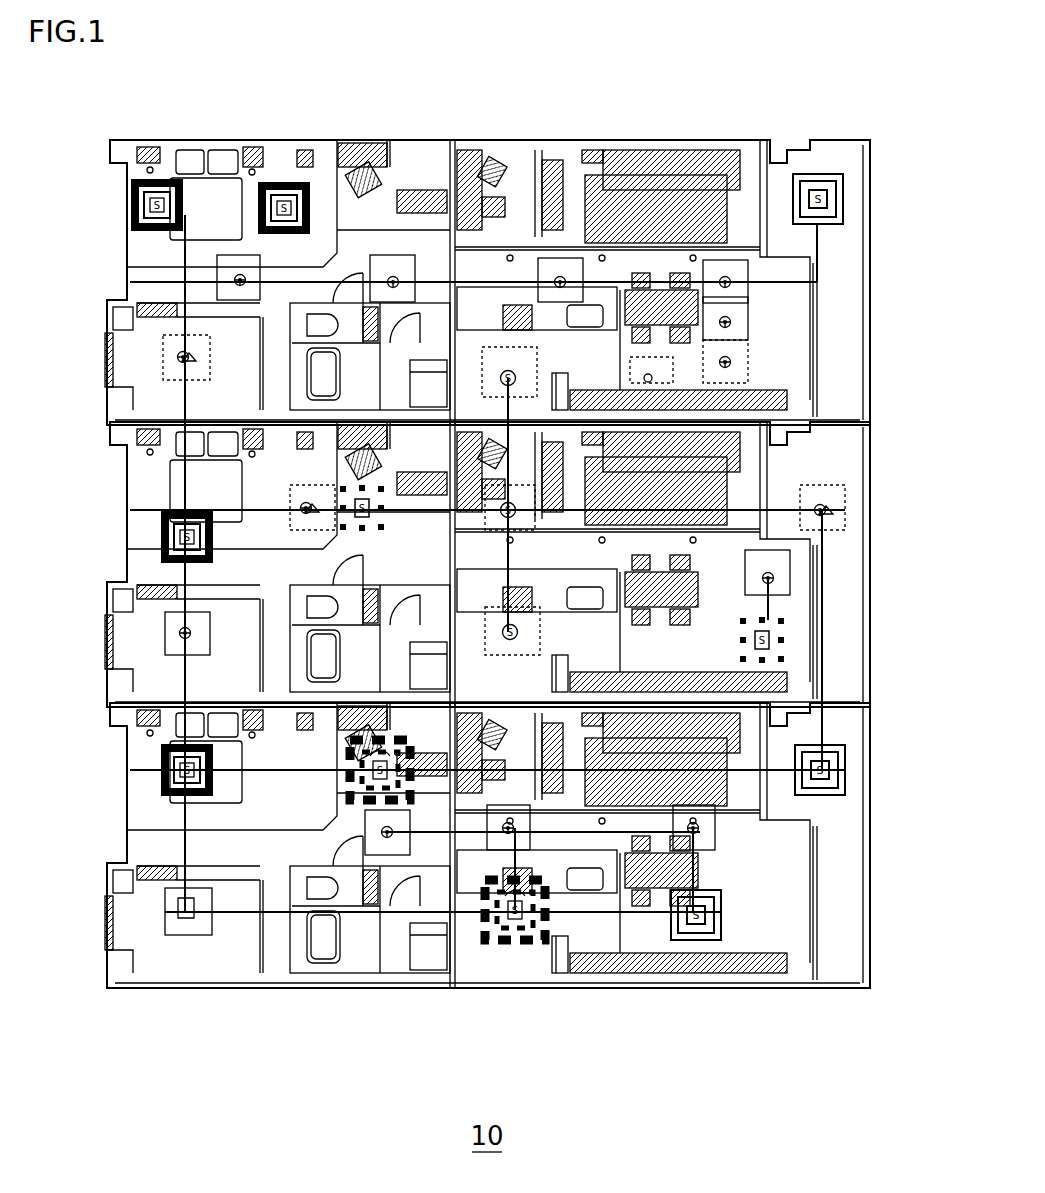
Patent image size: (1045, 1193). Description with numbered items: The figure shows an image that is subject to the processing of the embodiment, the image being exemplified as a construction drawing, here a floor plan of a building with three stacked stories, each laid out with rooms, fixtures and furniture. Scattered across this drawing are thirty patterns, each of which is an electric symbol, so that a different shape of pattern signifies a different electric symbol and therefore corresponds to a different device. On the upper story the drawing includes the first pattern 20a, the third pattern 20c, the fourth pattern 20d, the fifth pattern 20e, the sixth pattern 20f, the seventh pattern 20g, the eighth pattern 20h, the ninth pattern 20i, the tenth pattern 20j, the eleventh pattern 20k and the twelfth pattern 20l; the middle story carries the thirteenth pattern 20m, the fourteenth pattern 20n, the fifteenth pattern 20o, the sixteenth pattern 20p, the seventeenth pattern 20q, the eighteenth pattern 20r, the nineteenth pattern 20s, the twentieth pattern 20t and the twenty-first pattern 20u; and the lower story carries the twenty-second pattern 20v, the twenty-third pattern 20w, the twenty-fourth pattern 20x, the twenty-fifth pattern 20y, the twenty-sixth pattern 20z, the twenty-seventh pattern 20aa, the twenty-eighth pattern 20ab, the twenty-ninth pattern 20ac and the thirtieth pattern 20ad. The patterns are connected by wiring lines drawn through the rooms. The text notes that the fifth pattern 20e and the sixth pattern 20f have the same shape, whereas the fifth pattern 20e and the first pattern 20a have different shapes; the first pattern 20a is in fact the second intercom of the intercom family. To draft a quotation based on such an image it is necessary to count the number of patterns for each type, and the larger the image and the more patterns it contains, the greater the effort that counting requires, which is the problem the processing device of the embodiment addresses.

The first pattern 20a is at (152, 190).
The third pattern 20c is at (819, 180).
The fourth pattern 20d is at (284, 192).
The fifth pattern 20e is at (561, 275).
The sixth pattern 20f is at (394, 275).
The seventh pattern 20g is at (235, 280).
The eighth pattern 20h is at (178, 356).
The ninth pattern 20i is at (731, 320).
The tenth pattern 20j is at (731, 362).
The eleventh pattern 20k is at (649, 372).
The twelfth pattern 20l is at (509, 370).
The thirteenth pattern 20m is at (828, 508).
The fourteenth pattern 20n is at (517, 504).
The fifteenth pattern 20o is at (352, 500).
The sixteenth pattern 20p is at (300, 507).
The seventeenth pattern 20q is at (163, 538).
The eighteenth pattern 20r is at (775, 578).
The nineteenth pattern 20s is at (775, 640).
The twentieth pattern 20t is at (520, 630).
The twenty-first pattern 20u is at (178, 633).
The twenty-second pattern 20v is at (846, 770).
The twenty-third pattern 20w is at (350, 777).
The twenty-fourth pattern 20x is at (386, 845).
The twenty-fifth pattern 20y is at (512, 840).
The twenty-sixth pattern 20z is at (700, 832).
The twenty-seventh pattern 20aa is at (696, 925).
The twenty-eighth pattern 20ab is at (516, 925).
The twenty-ninth pattern 20ac is at (186, 925).
The thirtieth pattern 20ad is at (163, 770).